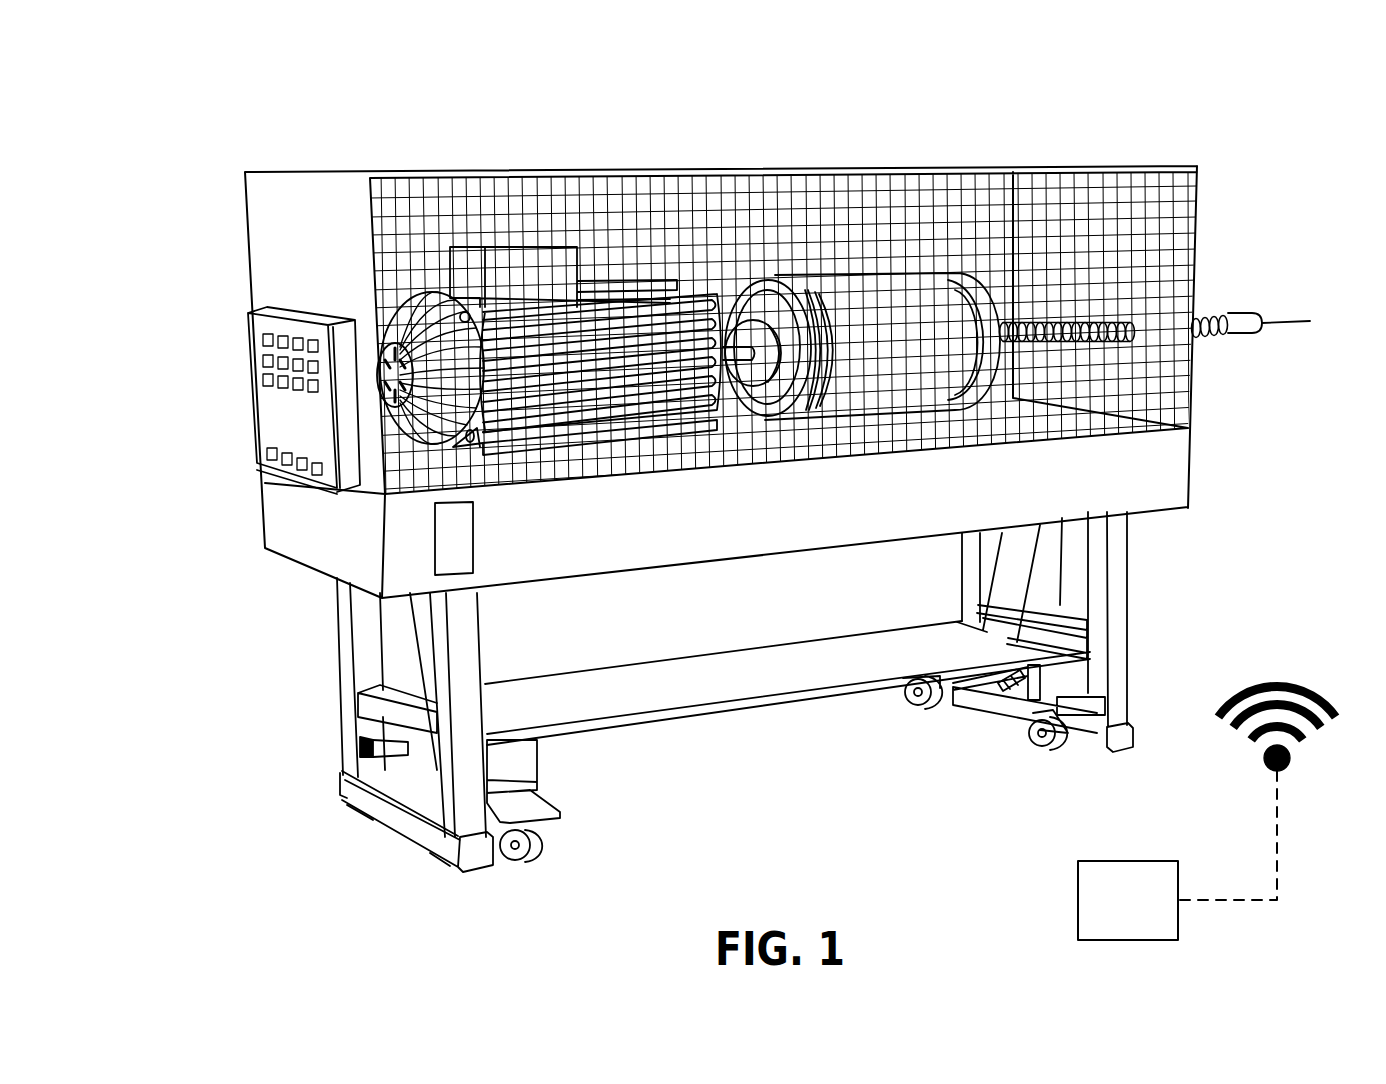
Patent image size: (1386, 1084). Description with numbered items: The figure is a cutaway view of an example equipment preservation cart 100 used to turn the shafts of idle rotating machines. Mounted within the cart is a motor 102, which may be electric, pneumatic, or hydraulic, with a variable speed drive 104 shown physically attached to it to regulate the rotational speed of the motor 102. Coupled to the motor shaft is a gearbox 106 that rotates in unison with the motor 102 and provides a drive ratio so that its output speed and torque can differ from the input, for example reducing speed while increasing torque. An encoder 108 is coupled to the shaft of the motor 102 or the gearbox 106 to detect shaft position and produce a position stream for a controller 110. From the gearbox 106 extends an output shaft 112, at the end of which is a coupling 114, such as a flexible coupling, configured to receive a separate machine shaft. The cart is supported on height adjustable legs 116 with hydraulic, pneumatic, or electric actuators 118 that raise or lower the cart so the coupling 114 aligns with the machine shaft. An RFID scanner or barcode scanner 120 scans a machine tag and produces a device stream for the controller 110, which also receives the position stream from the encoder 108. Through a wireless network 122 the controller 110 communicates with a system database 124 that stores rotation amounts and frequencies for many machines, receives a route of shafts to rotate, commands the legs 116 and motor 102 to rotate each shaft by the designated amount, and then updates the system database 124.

The equipment preservation cart 100 is at (178, 130).
The motor 102 is at (681, 300).
The variable speed drive 104 is at (510, 275).
The gearbox 106 is at (888, 290).
The encoder 108 is at (778, 346).
The controller 110 is at (285, 429).
The output shaft 112 is at (1107, 323).
The coupling 114 is at (1245, 313).
The height adjustable legs 116 is at (345, 647).
The actuators 118 is at (1032, 601).
The RFID scanner or barcode scanner 120 is at (447, 540).
The wireless network 122 is at (1302, 688).
The system database 124 is at (1151, 917).